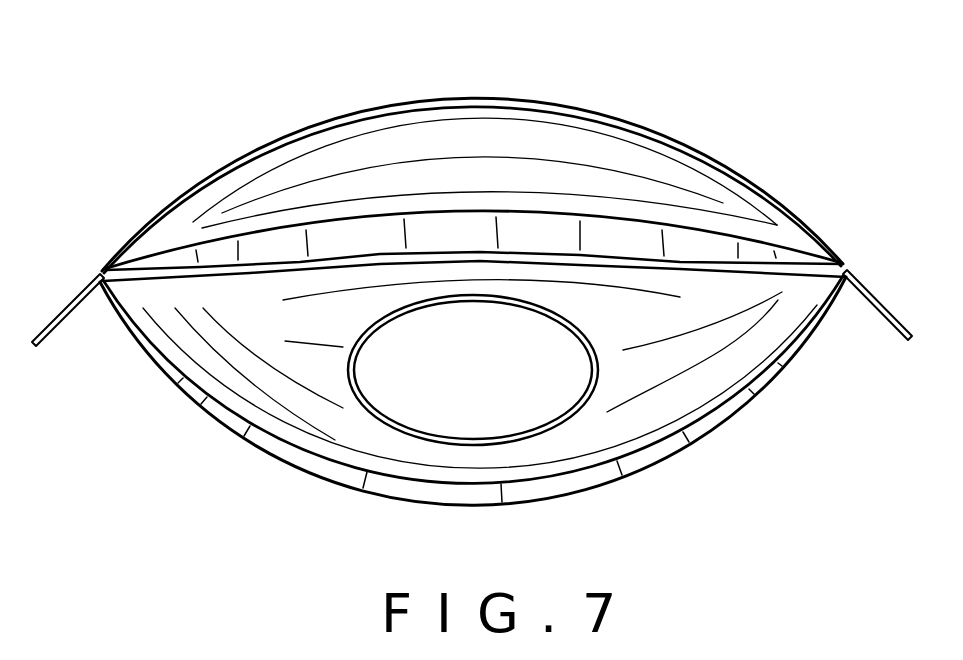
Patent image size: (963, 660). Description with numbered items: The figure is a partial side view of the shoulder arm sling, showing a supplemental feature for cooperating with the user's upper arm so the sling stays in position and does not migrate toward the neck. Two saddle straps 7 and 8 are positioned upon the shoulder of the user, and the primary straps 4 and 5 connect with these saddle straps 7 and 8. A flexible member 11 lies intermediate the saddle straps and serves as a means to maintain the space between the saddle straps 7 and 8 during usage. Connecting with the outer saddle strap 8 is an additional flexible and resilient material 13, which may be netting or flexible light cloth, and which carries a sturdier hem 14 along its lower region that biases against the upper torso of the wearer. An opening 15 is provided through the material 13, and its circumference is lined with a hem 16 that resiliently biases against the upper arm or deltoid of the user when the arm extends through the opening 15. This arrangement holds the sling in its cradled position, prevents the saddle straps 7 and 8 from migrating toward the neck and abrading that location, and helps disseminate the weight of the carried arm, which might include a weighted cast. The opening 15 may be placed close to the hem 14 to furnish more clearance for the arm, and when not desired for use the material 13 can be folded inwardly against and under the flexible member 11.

The primary strap 4 is at (75, 297).
The primary strap 5 is at (883, 298).
The saddle strap 7 is at (481, 100).
The outer saddle strap 8 is at (555, 235).
The flexible member 11 is at (437, 155).
The flexible and resilient material 13 is at (722, 373).
The hem 14 is at (655, 448).
The opening 15 is at (557, 320).
The hem 16 is at (358, 348).